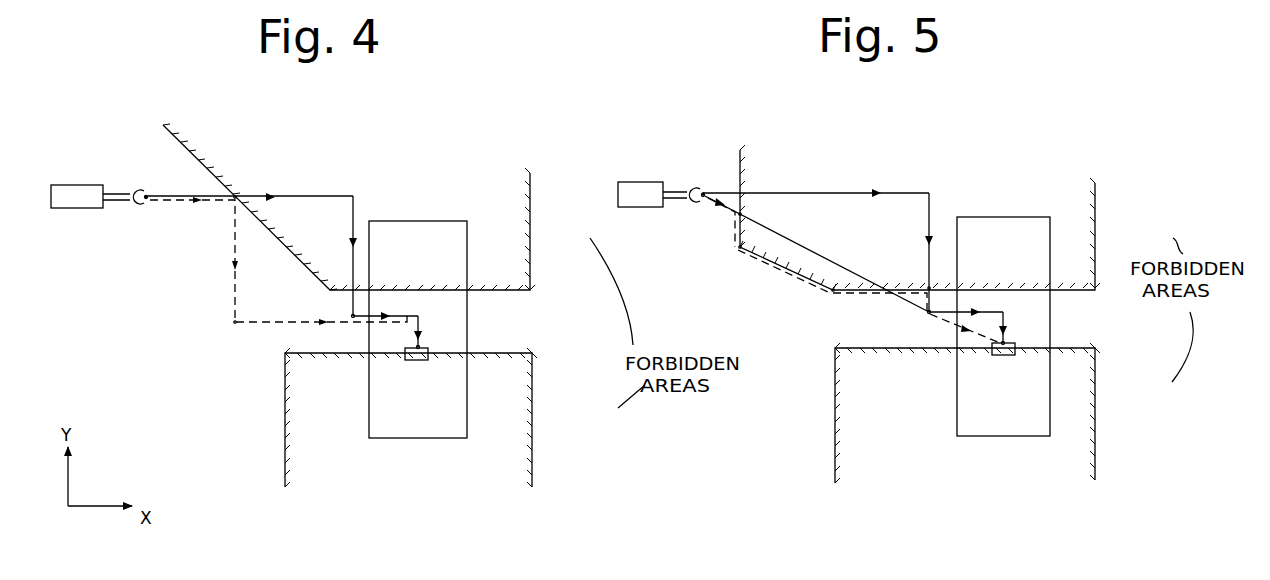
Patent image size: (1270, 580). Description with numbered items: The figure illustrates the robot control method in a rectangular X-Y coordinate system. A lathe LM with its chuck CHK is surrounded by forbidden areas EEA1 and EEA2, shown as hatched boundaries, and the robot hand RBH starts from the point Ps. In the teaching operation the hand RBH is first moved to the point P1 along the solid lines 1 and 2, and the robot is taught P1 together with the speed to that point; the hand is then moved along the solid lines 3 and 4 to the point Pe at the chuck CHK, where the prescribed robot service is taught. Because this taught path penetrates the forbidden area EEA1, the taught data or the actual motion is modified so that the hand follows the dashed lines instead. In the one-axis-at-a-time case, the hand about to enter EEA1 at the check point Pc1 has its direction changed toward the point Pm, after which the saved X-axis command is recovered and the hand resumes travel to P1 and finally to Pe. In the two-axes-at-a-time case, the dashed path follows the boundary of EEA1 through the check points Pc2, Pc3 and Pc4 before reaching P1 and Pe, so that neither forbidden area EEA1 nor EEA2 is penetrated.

In FIG. 4, the robot hand RBH is at (135, 205).
In FIG. 5, the robot hand RBH is at (695, 205).
In FIG. 4, the lathe LM is at (395, 438).
In FIG. 5, the lathe LM is at (983, 436).
In FIG. 4, the chuck CHK is at (423, 360).
In FIG. 5, the chuck CHK is at (1007, 355).
In FIG. 4, the forbidden area EEA1 is at (530, 230).
In FIG. 5, the forbidden area EEA1 is at (1095, 240).
In FIG. 4, the forbidden area EEA2 is at (532, 415).
In FIG. 5, the forbidden area EEA2 is at (1095, 400).
In FIG. 4, the start point Ps is at (145, 180).
In FIG. 5, the start point Ps is at (707, 188).
In FIG. 4, the check point Pc1 is at (235, 197).
In FIG. 5, the check point Pc1 is at (742, 214).
In FIG. 5, the check point Pc2 is at (737, 252).
In FIG. 5, the check point Pc3 is at (830, 294).
In FIG. 5, the check point Pc4 is at (930, 288).
In FIG. 4, the intermediate point Pm is at (209, 336).
In FIG. 4, the taught point P1 is at (331, 325).
In FIG. 5, the taught point P1 is at (906, 329).
In FIG. 4, the end point Pe is at (418, 347).
In FIG. 5, the end point Pe is at (1003, 343).
In FIG. 4, the solid line 1 is at (249, 187).
In FIG. 5, the solid line 1 is at (816, 180).
In FIG. 4, the solid line 2 is at (343, 256).
In FIG. 5, the solid line 2 is at (918, 252).
In FIG. 4, the solid line 3 is at (385, 307).
In FIG. 5, the solid line 3 is at (966, 303).
In FIG. 4, the solid line 4 is at (427, 331).
In FIG. 5, the solid line 4 is at (1014, 324).